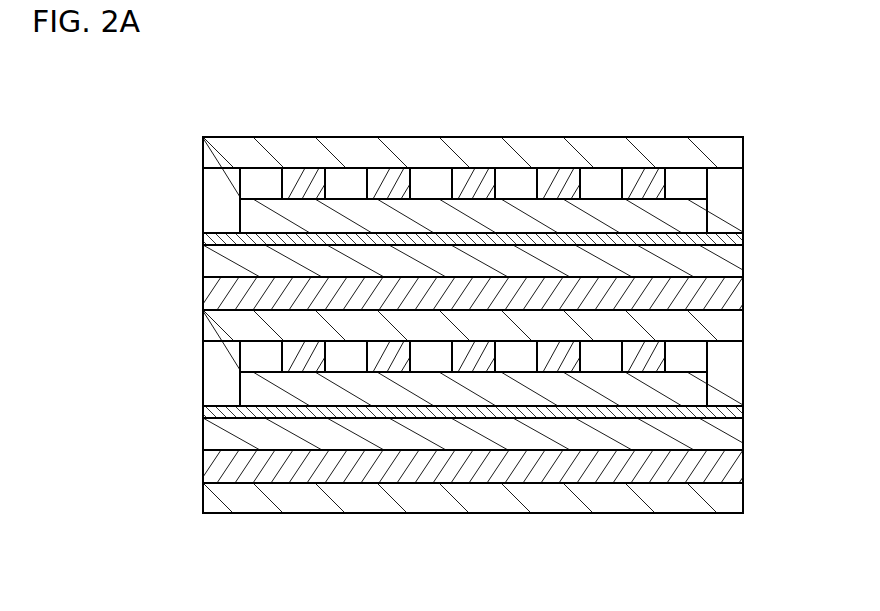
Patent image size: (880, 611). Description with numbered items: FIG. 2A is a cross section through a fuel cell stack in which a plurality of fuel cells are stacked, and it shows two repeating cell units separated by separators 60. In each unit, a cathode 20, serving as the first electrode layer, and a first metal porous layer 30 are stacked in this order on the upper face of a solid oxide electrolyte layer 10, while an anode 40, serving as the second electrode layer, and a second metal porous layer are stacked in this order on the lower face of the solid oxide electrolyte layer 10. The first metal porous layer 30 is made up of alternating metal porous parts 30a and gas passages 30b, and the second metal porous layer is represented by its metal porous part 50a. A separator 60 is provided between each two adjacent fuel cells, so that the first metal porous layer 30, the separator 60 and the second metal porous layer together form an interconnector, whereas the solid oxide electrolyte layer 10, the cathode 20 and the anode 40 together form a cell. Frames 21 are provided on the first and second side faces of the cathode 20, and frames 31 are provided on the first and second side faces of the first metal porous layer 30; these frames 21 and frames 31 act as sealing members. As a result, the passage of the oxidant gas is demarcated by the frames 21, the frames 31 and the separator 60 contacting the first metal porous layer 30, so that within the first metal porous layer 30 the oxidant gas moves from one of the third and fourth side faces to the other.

The solid oxide electrolyte layer 10 is at (222, 239).
The cathode 20 is at (687, 212).
The frame 21 is at (220, 212).
The first metal porous layer 30 is at (570, 53).
The metal porous part 30a is at (466, 175).
The gas passage 30b is at (513, 175).
The frame 31 is at (215, 177).
The anode 40 is at (727, 253).
The metal porous part 50a is at (727, 302).
The separator 60 is at (727, 153).